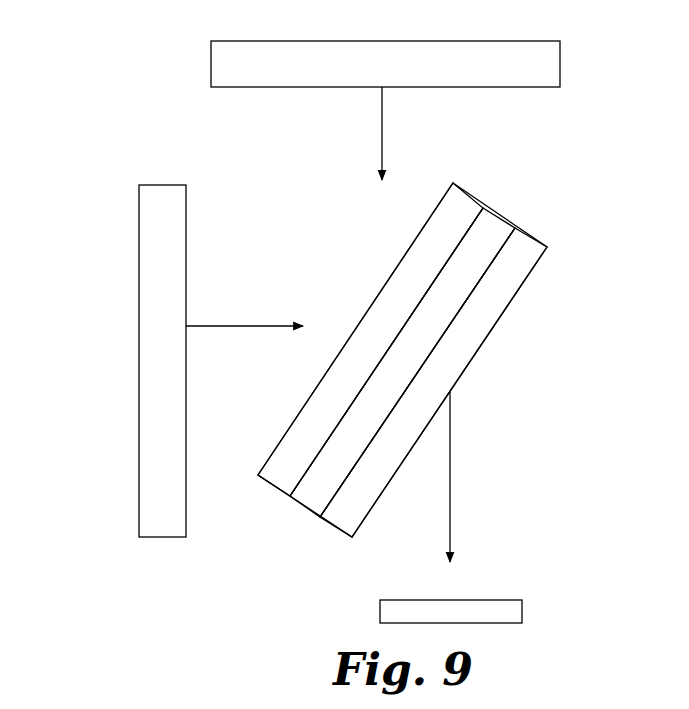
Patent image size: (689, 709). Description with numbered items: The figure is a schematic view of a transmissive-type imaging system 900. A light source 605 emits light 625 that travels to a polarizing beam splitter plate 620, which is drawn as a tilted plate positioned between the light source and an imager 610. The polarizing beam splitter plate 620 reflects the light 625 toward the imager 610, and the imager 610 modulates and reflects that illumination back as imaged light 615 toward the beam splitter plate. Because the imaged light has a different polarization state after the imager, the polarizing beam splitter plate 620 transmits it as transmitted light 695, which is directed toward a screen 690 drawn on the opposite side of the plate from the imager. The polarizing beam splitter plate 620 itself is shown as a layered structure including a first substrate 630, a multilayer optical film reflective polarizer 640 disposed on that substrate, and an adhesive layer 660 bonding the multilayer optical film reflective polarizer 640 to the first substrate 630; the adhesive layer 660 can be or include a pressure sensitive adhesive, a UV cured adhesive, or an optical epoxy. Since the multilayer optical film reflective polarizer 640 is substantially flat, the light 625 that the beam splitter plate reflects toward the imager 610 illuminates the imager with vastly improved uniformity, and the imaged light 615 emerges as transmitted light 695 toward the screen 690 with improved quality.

The transmissive-type imaging system 900 is at (133, 151).
The imager 610 is at (560, 63).
The imaged light 615 is at (382, 124).
The light source 605 is at (150, 273).
The light 625 is at (232, 323).
The polarizing beam splitter plate 620 is at (303, 517).
The first substrate 630 is at (465, 191).
The adhesive layer 660 is at (503, 216).
The multilayer optical film reflective polarizer 640 is at (535, 236).
The transmitted light 695 is at (450, 480).
The screen 690 is at (512, 607).